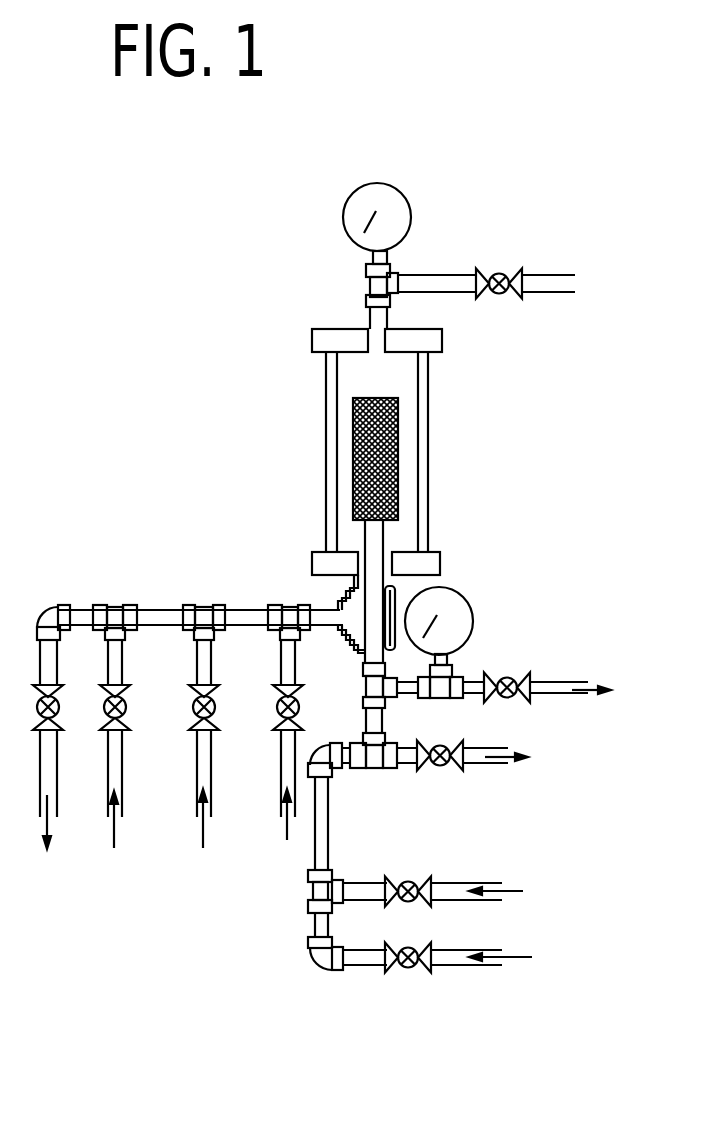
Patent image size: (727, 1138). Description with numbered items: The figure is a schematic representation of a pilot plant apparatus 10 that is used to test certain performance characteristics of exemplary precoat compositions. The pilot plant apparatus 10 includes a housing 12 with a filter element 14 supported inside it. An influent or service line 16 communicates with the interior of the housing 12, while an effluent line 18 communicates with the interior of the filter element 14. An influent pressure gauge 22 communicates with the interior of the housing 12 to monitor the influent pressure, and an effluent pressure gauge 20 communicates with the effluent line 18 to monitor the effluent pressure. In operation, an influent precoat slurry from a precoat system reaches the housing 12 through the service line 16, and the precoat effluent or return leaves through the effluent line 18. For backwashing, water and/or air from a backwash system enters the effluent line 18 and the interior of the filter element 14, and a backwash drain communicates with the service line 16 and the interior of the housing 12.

The pilot plant apparatus 10 is at (132, 303).
The housing 12 is at (326, 398).
The filter element 14 is at (355, 496).
The influent or service line 16 is at (327, 611).
The effluent line 18 is at (372, 657).
The effluent pressure gauge 20 is at (474, 641).
The influent pressure gauge 22 is at (412, 214).